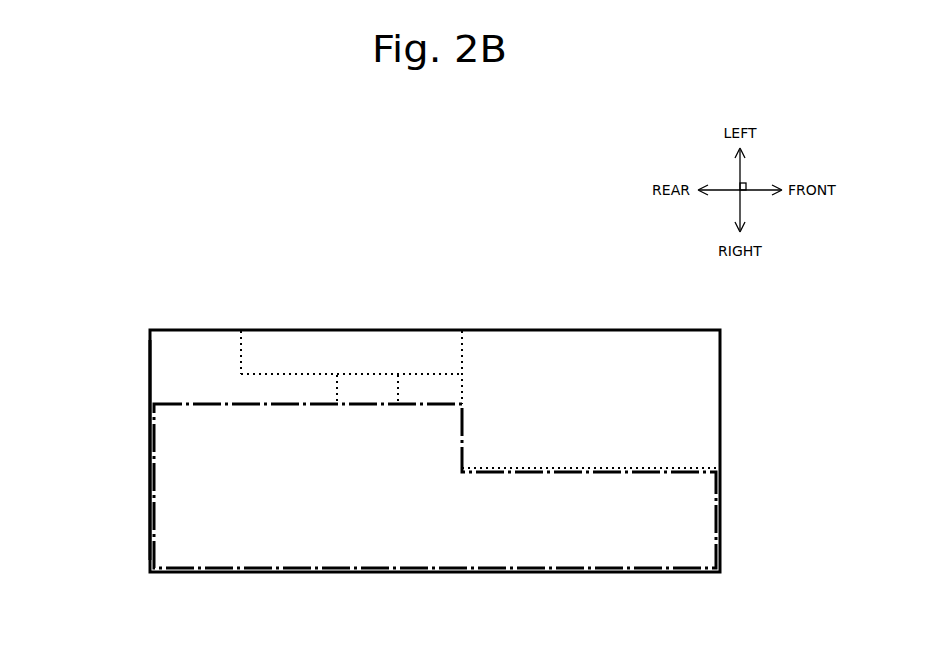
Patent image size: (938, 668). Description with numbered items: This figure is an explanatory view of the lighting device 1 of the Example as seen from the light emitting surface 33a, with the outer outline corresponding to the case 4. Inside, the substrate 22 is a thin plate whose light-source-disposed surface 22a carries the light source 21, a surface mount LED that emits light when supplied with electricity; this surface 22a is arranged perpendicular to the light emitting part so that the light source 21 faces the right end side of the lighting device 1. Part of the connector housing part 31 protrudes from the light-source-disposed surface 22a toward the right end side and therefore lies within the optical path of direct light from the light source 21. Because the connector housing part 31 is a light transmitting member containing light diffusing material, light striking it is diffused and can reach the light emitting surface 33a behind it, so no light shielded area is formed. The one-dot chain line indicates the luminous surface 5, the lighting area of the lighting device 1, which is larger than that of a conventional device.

The lighting device 1 is at (223, 221).
The case 4 is at (158, 330).
The luminous surface 5 is at (404, 568).
The light source 21 is at (385, 387).
The substrate 22 is at (313, 334).
The light-source-disposed surface 22a is at (259, 377).
The connector housing part 31 is at (552, 336).
The light emitting surface 33a is at (162, 384).